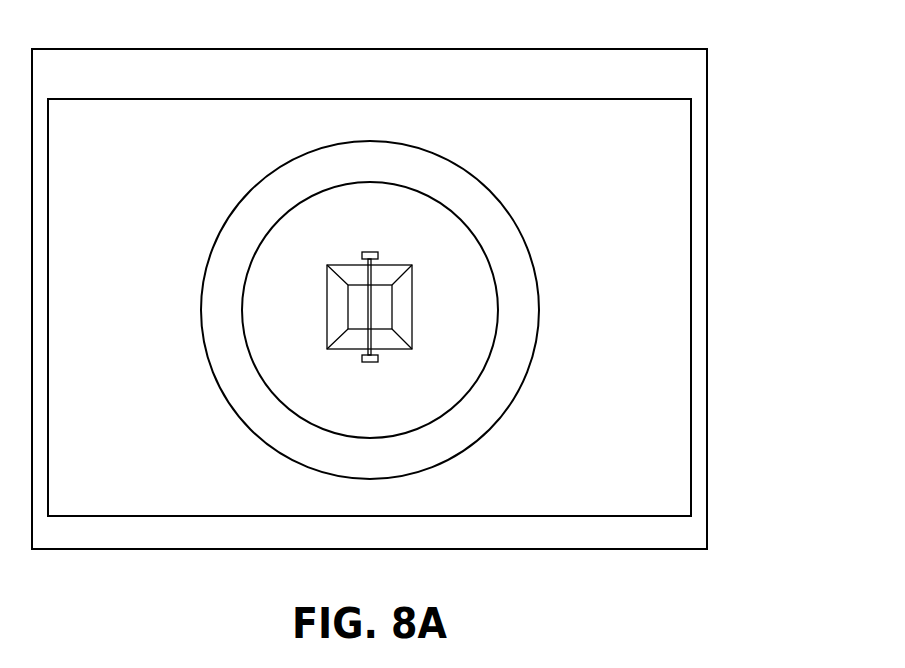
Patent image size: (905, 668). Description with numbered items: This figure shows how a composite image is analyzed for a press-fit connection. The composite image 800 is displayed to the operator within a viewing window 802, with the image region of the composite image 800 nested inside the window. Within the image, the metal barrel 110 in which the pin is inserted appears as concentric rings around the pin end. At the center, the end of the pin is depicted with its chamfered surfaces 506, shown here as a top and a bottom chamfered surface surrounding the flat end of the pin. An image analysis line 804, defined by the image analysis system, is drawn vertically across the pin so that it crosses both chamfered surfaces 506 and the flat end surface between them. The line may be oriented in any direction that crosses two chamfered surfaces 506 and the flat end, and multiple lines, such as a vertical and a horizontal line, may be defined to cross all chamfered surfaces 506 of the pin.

The viewing window 802 is at (657, 49).
The composite image 800 is at (657, 165).
The metal barrel 110 is at (472, 198).
The chamfered surfaces 506 is at (399, 270).
The image analysis line 804 is at (367, 310).